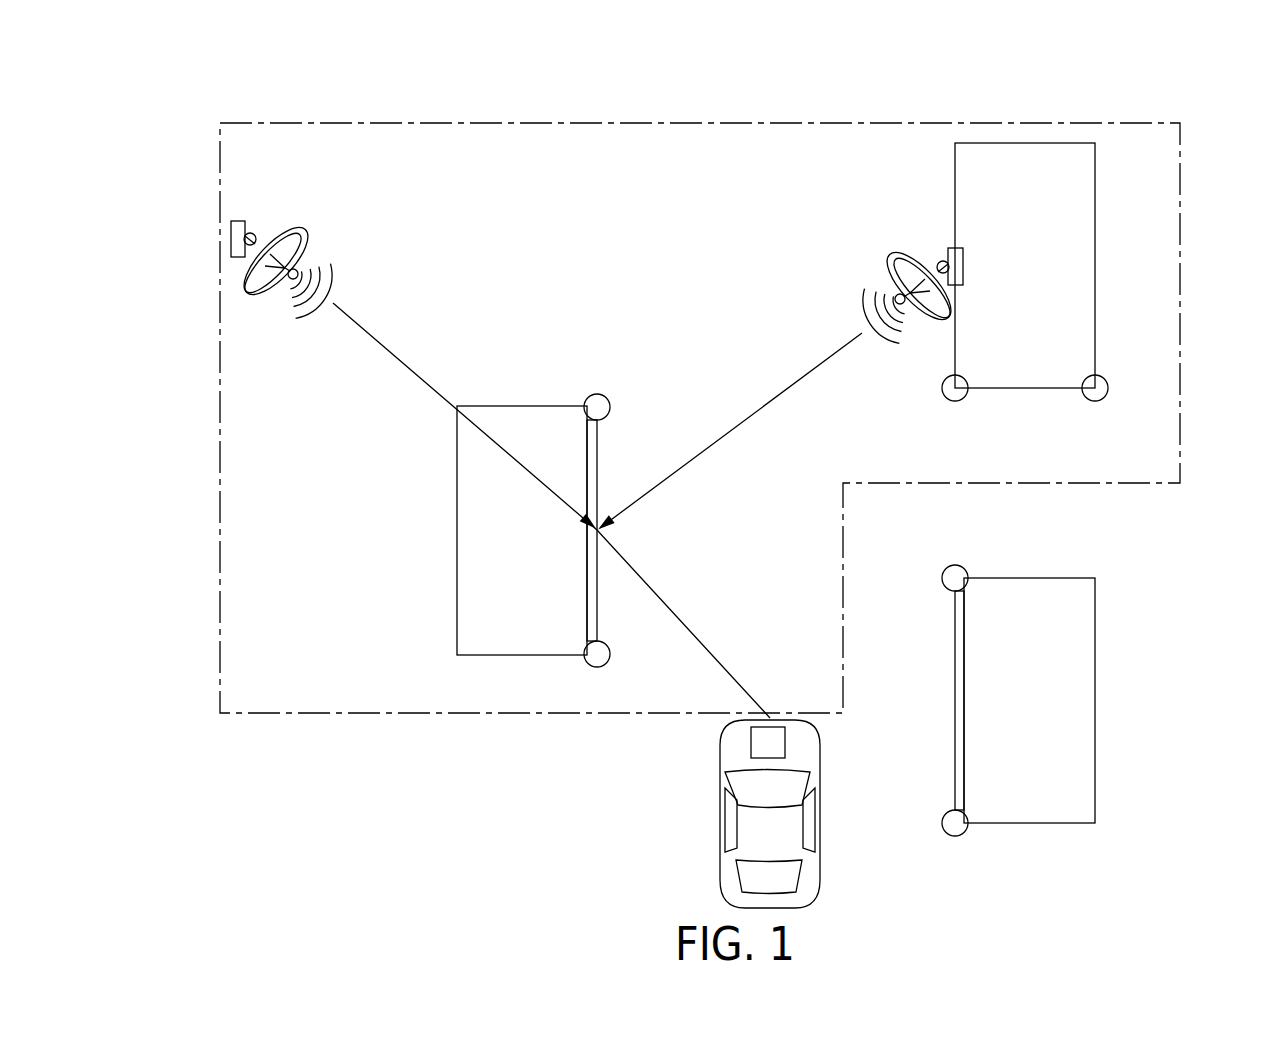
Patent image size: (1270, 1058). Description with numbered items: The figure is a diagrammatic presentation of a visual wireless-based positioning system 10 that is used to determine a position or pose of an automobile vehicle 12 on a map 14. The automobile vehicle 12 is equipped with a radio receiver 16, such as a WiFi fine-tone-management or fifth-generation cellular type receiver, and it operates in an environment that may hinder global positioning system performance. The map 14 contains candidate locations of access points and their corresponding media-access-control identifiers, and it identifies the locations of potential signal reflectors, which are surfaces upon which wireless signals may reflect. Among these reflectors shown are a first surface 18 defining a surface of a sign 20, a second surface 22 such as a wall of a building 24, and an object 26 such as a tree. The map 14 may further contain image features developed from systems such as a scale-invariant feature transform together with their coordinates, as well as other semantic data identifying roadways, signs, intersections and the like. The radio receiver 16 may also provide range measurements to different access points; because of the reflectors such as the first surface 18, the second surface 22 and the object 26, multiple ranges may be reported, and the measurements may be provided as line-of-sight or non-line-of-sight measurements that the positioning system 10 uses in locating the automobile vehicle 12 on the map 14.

The visual wireless-based positioning system 10 is at (1198, 107).
The automobile vehicle 12 is at (801, 814).
The map 14 is at (700, 122).
The radio receiver 16 is at (781, 755).
The first surface 18 is at (594, 468).
The sign 20 is at (543, 543).
The second surface 22 is at (944, 697).
The building 24 is at (1040, 713).
The object 26 is at (955, 392).